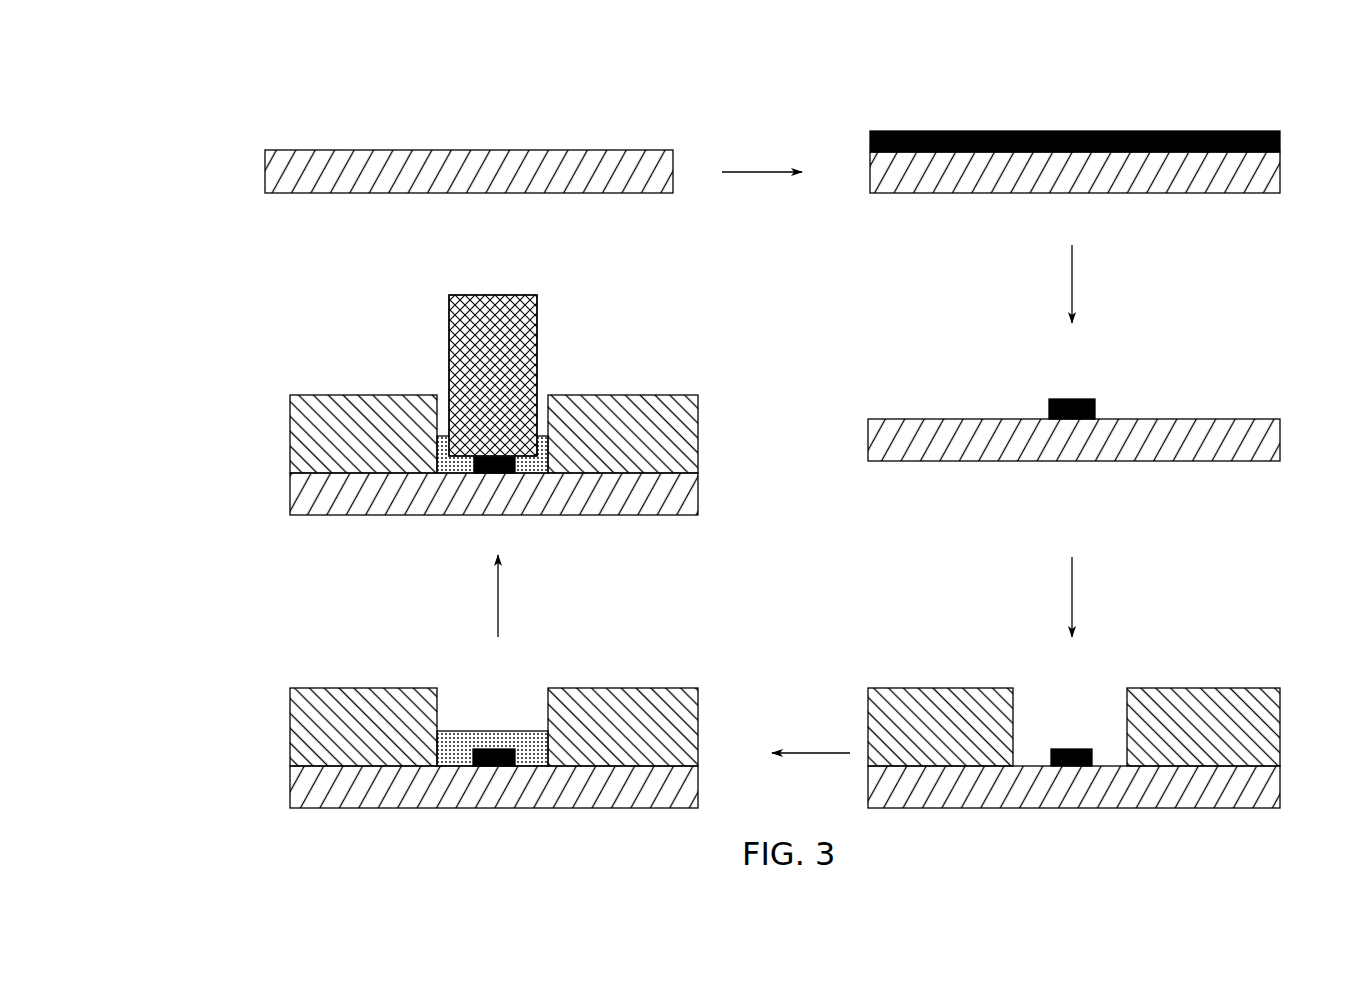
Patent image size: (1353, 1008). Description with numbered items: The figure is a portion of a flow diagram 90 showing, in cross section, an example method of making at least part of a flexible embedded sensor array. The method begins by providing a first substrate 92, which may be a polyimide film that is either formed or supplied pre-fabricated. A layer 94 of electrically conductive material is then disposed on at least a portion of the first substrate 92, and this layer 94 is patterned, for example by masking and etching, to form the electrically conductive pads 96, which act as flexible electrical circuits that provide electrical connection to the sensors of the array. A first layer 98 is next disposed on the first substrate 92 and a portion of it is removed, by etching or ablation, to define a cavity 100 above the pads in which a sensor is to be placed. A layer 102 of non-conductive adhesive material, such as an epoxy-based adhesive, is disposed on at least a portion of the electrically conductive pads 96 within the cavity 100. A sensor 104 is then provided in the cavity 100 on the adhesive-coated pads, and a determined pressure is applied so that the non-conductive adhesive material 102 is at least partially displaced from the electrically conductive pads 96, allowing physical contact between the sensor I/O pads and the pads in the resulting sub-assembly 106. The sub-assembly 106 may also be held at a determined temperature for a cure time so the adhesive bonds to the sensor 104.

The flow diagram 90 is at (228, 85).
The first substrate 92 is at (600, 148).
The layer 94 is at (1282, 140).
The electrically conductive pads 96 is at (1097, 410).
The first layer 98 is at (1282, 720).
The cavity 100 is at (1105, 692).
The layer of non-conductive adhesive material 102 is at (455, 729).
The sensor 104 is at (540, 302).
The sub-assembly 106 is at (290, 295).